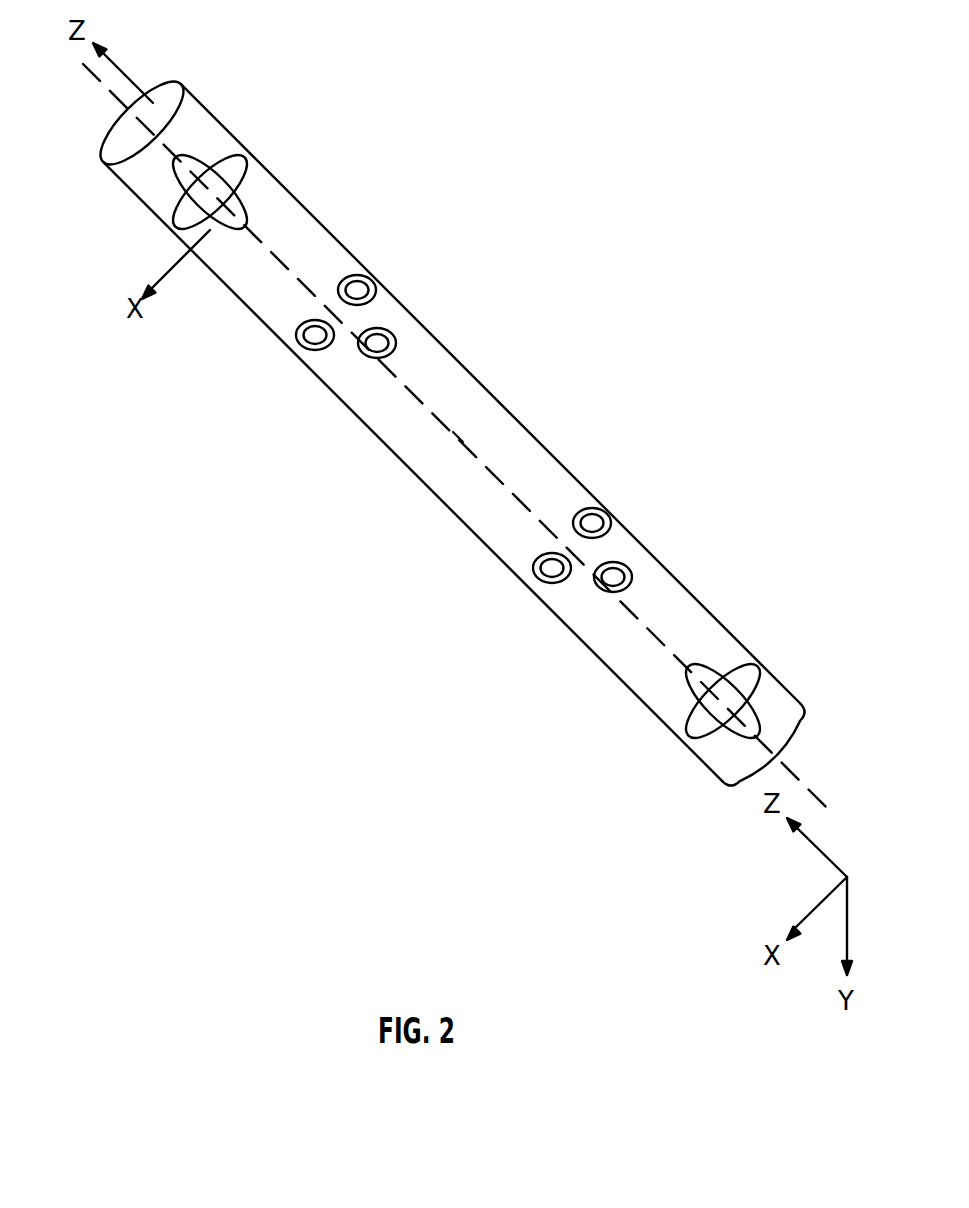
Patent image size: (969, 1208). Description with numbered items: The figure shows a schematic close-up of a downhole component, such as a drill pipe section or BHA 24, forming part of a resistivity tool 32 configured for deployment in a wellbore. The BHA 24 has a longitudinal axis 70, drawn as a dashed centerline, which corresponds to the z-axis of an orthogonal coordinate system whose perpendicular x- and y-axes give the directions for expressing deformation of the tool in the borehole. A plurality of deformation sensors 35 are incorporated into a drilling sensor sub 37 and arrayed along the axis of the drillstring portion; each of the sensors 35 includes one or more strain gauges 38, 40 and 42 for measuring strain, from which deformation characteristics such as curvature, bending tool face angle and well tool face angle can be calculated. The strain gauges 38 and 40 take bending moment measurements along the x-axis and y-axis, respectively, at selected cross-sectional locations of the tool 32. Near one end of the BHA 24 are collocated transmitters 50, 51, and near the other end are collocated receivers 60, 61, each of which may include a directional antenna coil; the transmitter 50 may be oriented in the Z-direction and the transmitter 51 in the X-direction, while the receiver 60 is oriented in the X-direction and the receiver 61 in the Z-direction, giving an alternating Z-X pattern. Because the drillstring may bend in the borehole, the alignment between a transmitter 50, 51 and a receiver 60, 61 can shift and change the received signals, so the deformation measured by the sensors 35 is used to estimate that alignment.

The BHA 24 is at (571, 81).
The tool 32 is at (411, 250).
The deformation sensors 35 is at (352, 320).
The drilling sensor sub 37 is at (482, 380).
The strain gauge 38 is at (603, 511).
The strain gauge 40 is at (535, 570).
The strain gauge 42 is at (620, 560).
The transmitter 50 is at (247, 156).
The transmitter 51 is at (170, 167).
The receiver 60 is at (687, 727).
The receiver 61 is at (707, 667).
The longitudinal axis 70 is at (458, 435).